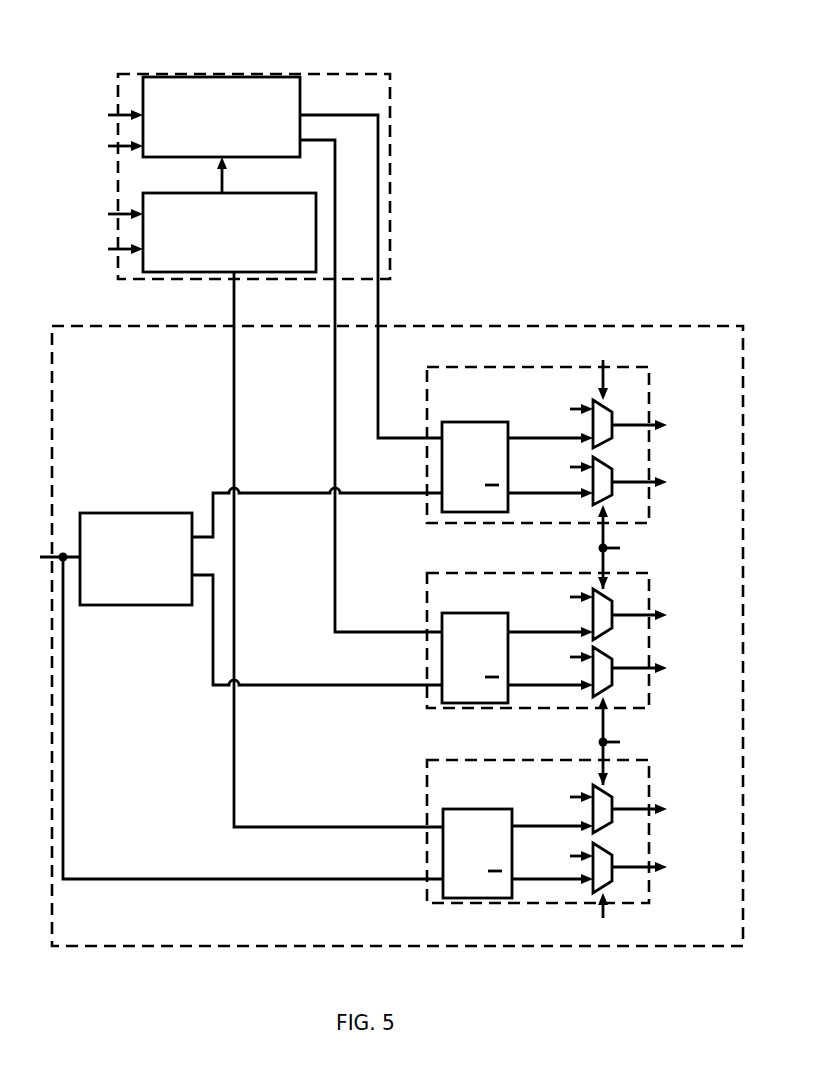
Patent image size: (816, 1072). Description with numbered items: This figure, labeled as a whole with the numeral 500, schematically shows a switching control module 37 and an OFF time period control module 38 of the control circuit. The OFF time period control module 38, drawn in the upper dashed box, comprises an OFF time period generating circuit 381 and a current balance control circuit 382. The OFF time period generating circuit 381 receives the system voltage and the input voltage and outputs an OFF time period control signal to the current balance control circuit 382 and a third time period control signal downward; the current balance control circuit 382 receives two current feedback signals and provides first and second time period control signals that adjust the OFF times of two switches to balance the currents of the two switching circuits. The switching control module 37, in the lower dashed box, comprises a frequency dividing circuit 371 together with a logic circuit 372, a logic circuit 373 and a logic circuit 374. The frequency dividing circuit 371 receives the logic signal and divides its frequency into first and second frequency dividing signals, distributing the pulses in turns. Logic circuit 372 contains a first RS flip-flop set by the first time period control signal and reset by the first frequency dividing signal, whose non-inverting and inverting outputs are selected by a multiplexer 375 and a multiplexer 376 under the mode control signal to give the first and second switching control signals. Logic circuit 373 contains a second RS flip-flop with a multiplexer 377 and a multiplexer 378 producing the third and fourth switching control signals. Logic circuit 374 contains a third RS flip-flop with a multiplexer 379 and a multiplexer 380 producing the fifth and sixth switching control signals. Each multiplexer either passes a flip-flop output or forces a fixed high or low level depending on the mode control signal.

The controller 500 is at (615, 193).
The switching control module 37 is at (666, 326).
The OFF time period control module 38 is at (392, 112).
The frequency dividing circuit 371 is at (160, 513).
The logic circuit 372 is at (530, 355).
The logic circuit 373 is at (510, 561).
The logic circuit 374 is at (504, 748).
The multiplexer 375 is at (612, 417).
The multiplexer 376 is at (612, 474).
The multiplexer 377 is at (622, 595).
The multiplexer 378 is at (622, 652).
The multiplexer 379 is at (612, 800).
The multiplexer 380 is at (612, 860).
The OFF time period generating circuit 381 is at (288, 180).
The current balance control circuit 382 is at (302, 105).